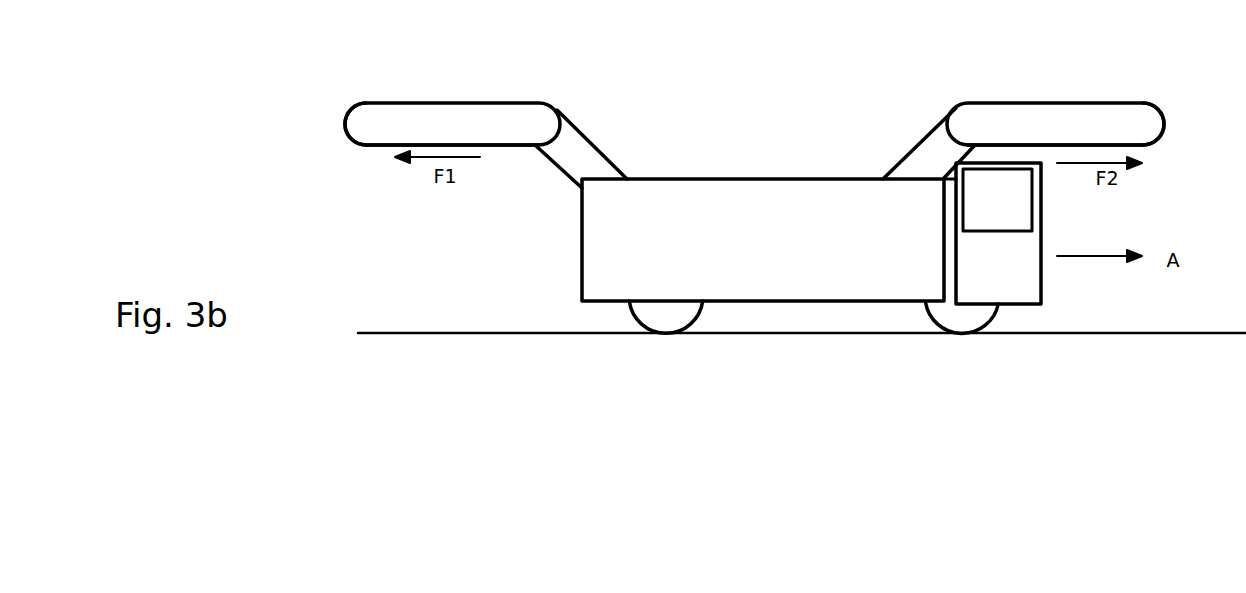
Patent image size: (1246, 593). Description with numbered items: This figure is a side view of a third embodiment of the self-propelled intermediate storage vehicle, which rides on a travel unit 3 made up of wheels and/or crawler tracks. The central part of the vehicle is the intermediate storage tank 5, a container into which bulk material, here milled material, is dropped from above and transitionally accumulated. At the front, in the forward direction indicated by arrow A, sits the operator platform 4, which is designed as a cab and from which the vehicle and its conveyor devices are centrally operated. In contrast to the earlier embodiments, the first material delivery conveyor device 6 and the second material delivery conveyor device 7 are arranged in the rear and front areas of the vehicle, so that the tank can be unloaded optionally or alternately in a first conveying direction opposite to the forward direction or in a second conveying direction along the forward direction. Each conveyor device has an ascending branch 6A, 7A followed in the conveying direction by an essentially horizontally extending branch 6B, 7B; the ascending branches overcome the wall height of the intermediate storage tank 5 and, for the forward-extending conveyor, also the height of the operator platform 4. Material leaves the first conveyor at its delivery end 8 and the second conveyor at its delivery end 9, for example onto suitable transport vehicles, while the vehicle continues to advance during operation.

The travel unit 3 is at (665, 310).
The operator platform 4 is at (1009, 275).
The intermediate storage tank 5 is at (762, 215).
The first material delivery conveyor device 6 is at (478, 124).
The ascending branch 6A is at (583, 160).
The essentially horizontally extending branch 6B is at (372, 124).
The second material delivery conveyor device 7 is at (1022, 113).
The ascending branch 7A is at (940, 157).
The essentially horizontally extending branch 7B is at (1090, 113).
The delivery end 8 is at (341, 124).
The delivery end 9 is at (1169, 124).